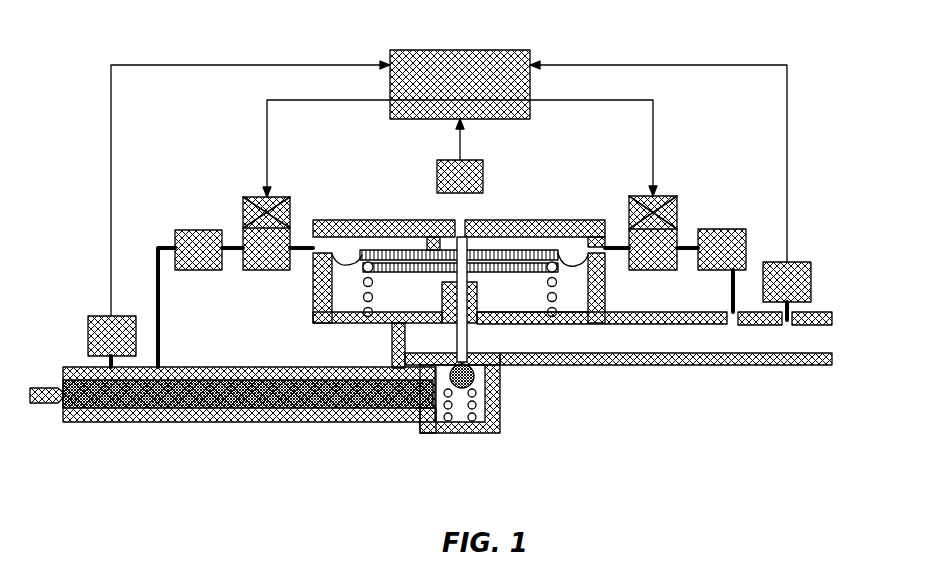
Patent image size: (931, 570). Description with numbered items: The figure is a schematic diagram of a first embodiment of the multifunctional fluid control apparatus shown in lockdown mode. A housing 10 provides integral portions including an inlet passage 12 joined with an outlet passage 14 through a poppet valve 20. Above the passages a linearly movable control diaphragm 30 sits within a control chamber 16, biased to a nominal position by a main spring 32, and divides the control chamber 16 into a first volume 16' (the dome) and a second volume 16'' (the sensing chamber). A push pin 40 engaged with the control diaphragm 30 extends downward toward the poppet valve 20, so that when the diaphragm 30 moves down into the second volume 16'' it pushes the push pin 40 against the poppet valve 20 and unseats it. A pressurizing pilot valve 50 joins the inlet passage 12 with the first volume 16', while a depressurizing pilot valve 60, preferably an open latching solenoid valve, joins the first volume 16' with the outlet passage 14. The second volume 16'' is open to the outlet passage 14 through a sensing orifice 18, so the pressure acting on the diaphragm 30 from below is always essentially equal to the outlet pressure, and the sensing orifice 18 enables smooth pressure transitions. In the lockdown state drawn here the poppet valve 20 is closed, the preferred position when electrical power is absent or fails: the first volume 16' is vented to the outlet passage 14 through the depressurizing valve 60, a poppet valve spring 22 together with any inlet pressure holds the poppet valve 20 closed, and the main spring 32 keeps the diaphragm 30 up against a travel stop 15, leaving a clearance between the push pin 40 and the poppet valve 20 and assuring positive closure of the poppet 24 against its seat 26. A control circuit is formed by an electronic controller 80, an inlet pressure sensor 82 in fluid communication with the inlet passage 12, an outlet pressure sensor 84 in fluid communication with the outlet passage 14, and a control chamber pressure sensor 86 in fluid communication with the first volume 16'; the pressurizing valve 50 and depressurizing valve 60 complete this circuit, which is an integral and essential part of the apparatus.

The housing 10 is at (316, 222).
The inlet passage 12 is at (190, 367).
The outlet passage 14 is at (768, 366).
The travel stop 15 is at (423, 237).
The control chamber 16 is at (335, 258).
The first volume 16' is at (475, 224).
The second volume 16'' is at (569, 356).
The sensing orifice 18 is at (425, 327).
The poppet valve 20 is at (512, 420).
The poppet valve spring 22 is at (435, 420).
The poppet 24 is at (458, 430).
The seat 26 is at (460, 405).
The control diaphragm 30 is at (487, 275).
The main spring 32 is at (365, 296).
The push pin 40 is at (462, 327).
The pressurizing pilot valve 50 is at (243, 203).
The depressurizing pilot valve 60 is at (677, 212).
The electronic controller 80 is at (517, 50).
The inlet pressure sensor 82 is at (97, 316).
The outlet pressure sensor 84 is at (811, 275).
The control chamber pressure sensor 86 is at (483, 173).